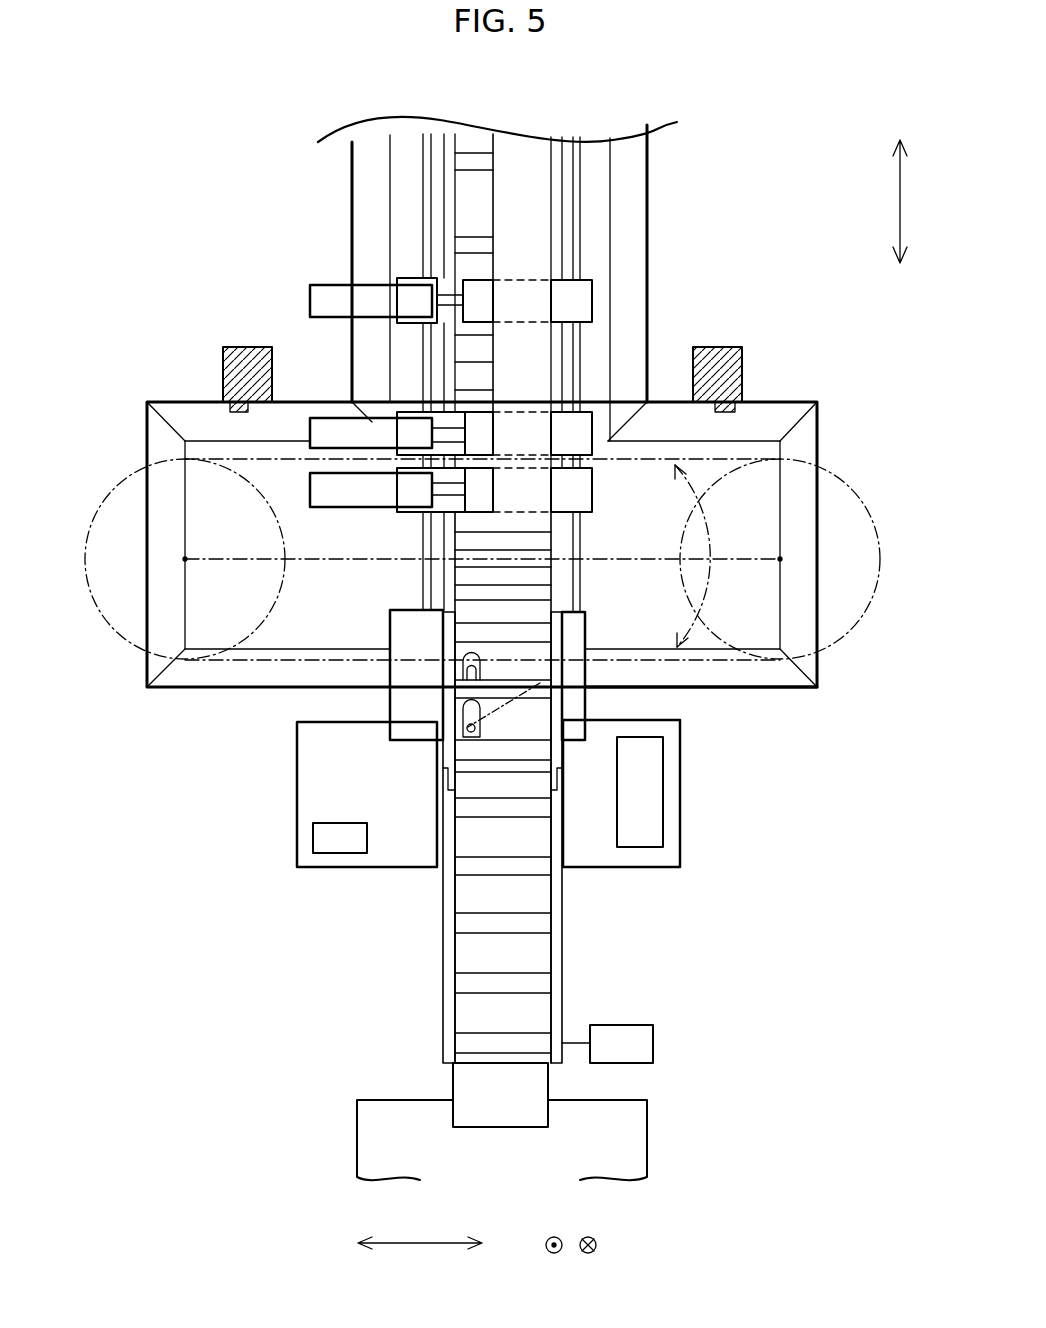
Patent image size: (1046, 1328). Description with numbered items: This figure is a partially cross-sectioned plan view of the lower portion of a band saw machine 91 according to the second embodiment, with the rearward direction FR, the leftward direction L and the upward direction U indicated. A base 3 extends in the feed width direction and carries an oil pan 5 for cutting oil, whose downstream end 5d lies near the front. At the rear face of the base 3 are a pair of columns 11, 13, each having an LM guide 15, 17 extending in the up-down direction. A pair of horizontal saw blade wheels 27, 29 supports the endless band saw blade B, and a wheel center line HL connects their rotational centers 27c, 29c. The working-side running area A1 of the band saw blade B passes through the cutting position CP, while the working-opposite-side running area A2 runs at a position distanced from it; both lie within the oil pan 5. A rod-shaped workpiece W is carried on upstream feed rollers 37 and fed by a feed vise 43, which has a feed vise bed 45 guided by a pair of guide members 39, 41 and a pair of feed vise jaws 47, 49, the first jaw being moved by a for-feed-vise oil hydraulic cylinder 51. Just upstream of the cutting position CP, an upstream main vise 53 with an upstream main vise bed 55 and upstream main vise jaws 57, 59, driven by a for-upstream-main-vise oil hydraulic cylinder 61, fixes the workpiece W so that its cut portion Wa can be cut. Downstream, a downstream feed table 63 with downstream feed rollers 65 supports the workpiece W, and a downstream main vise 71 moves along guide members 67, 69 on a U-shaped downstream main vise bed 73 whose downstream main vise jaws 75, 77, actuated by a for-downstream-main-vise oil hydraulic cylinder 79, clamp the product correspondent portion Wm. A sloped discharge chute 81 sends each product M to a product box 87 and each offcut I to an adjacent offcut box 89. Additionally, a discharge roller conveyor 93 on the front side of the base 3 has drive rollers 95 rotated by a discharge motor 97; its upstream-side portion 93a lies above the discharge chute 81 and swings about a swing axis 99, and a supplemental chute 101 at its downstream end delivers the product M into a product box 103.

The base 3 is at (254, 702).
The oil pan 5 is at (170, 688).
The downstream end of the oil pan 5d is at (780, 690).
The column 11 is at (223, 362).
The column 13 is at (742, 362).
The LM guide 15 is at (232, 408).
The LM guide 17 is at (735, 410).
The first saw blade wheel 27 is at (112, 630).
The rotational center 27c is at (185, 559).
The second saw blade wheel 29 is at (855, 630).
The rotational center 29c is at (780, 559).
The upstream feed roller 37 is at (478, 153).
The guide member 39 is at (423, 162).
The guide member 41 is at (647, 246).
The feed vise 43 is at (472, 266).
The feed vise bed 45 is at (403, 278).
The first feed vise jaw 47 is at (485, 300).
The second feed vise jaw 49 is at (600, 302).
The for-feed-vise oil hydraulic cylinder 51 is at (310, 300).
The upstream main vise 53 is at (445, 417).
The upstream main vise bed 55 is at (465, 398).
The first upstream main vise jaw 57 is at (480, 420).
The second upstream main vise jaw 59 is at (580, 425).
The for-upstream-main-vise oil hydraulic cylinder 61 is at (310, 432).
The downstream feed table 63 is at (440, 573).
The downstream feed roller 65 is at (535, 568).
The guide member 67 is at (422, 594).
The guide member 69 is at (580, 598).
The downstream main vise 71 is at (431, 527).
The downstream main vise bed 73 is at (405, 512).
The first downstream main vise jaw 75 is at (474, 500).
The second downstream main vise jaw 77 is at (578, 497).
The for-downstream-main-vise oil hydraulic cylinder 79 is at (310, 492).
The discharge chute 81 is at (585, 672).
The product box 87 is at (600, 868).
The offcut box 89 is at (405, 868).
The band saw machine 91 is at (768, 292).
The discharge roller conveyor 93 is at (431, 1004).
The upstream-side portion of the discharge roller conveyor 93a is at (447, 643).
The drive roller 95 is at (548, 692).
The discharge motor 97 is at (653, 1043).
The swing axis 99 is at (515, 782).
The supplemental chute 101 is at (498, 1110).
The product box 103 is at (647, 1145).
The workpiece W is at (647, 197).
The cut portion Wa is at (580, 494).
The product correspondent portion Wm is at (530, 505).
The cutting position CP is at (520, 470).
The wheel center line HL is at (741, 557).
The working-side running area A1 is at (701, 556).
The working-opposite-side running area A2 is at (709, 609).
The band saw blade B is at (700, 660).
The offcut I is at (340, 855).
The product M is at (640, 850).
The rearward direction FR is at (899, 203).
The leftward direction L is at (422, 1245).
The upward direction U is at (571, 1231).